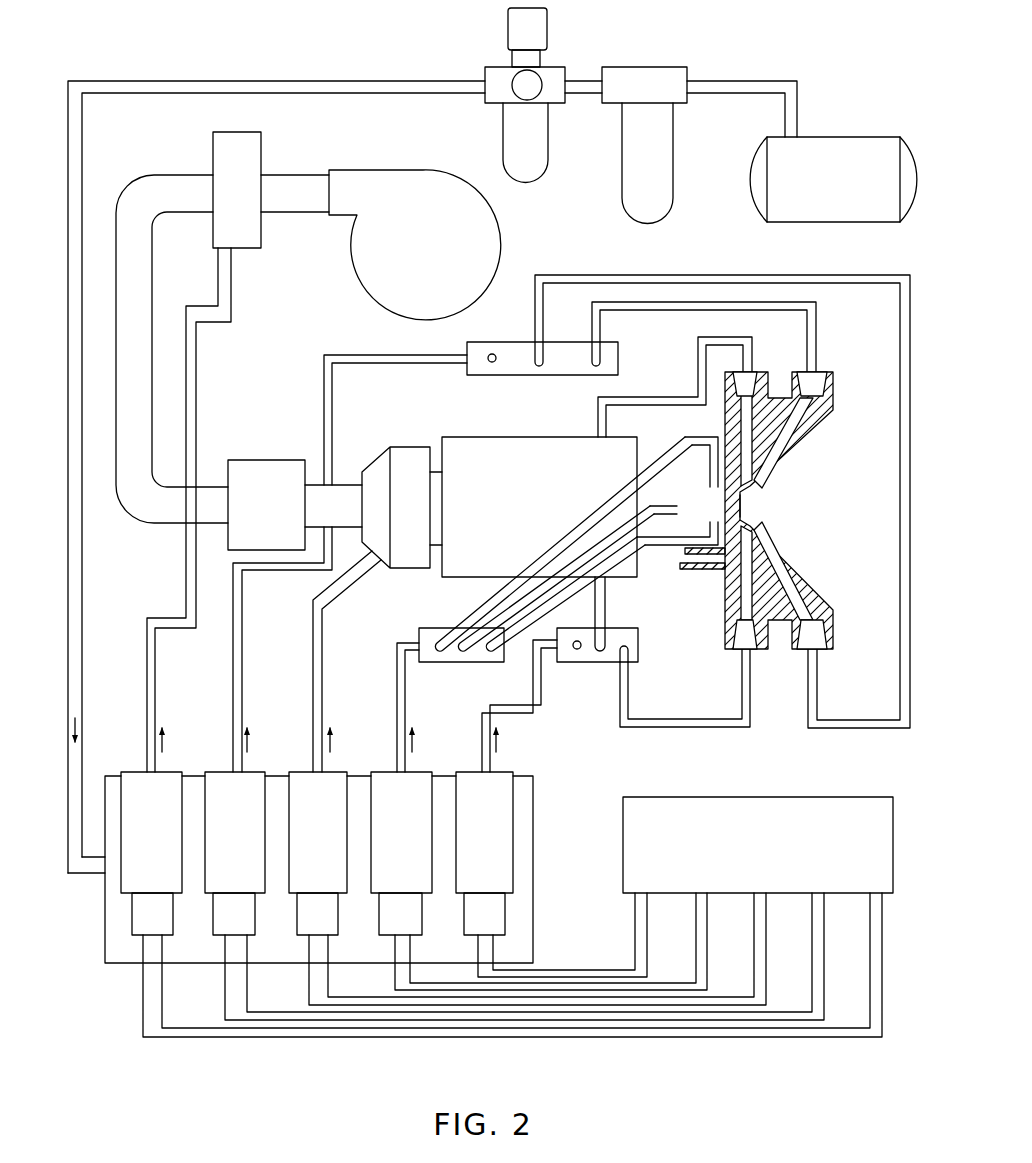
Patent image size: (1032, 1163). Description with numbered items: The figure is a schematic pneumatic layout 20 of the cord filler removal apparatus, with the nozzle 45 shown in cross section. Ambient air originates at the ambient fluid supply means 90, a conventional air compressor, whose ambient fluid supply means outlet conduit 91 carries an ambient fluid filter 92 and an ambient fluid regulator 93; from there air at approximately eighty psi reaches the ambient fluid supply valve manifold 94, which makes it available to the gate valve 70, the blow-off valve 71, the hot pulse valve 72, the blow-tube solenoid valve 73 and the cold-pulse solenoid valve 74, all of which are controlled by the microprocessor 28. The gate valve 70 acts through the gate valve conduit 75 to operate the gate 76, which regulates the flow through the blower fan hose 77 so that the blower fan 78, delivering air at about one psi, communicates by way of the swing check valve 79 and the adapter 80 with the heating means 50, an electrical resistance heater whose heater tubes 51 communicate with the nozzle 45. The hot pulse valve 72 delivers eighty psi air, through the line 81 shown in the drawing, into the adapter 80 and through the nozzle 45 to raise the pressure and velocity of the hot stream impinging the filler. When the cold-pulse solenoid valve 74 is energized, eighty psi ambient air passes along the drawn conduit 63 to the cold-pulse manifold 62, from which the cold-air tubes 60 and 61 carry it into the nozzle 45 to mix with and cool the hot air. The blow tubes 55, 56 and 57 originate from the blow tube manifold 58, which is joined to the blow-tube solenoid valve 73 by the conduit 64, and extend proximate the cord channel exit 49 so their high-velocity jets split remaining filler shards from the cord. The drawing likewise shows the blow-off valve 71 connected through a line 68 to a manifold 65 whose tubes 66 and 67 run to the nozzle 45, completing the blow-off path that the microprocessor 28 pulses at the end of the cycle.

The pneumatic control system 20 is at (346, 74).
The microprocessor 28 is at (725, 860).
The nozzle 45 is at (796, 487).
The cord channel exit 49 is at (736, 506).
The heating means 50 is at (495, 520).
The heater tubes 51 is at (643, 448).
The blow tube 55 is at (493, 594).
The blow tube 56 is at (503, 611).
The blow tube 57 is at (547, 614).
The blow tube manifold 58 is at (488, 664).
The cold-air tube 60 is at (634, 718).
The cold-air tube 61 is at (688, 398).
The cold-pulse manifold 62 is at (641, 658).
The conduit 63 is at (531, 678).
The conduit 64 is at (408, 680).
The connector block 65 is at (553, 368).
The conduit 66 is at (684, 312).
The conduit 67 is at (535, 284).
The conduit 68 is at (432, 366).
The gate valve 70 is at (141, 840).
The blow-off valve 71 is at (225, 840).
The hot pulse valve 72 is at (308, 840).
The blow-tube solenoid valve 73 is at (391, 840).
The cold-pulse solenoid valve 74 is at (474, 840).
The gate valve conduit 75 is at (158, 678).
The gate 76 is at (227, 175).
The blower fan hose 77 is at (127, 340).
The blower fan 78 is at (405, 255).
The swing check valve 79 is at (255, 510).
The adapter 80 is at (400, 518).
The conduit 81 is at (326, 678).
The ambient fluid supply means 90 is at (812, 192).
The ambient fluid supply means outlet conduit 91 is at (799, 121).
The ambient fluid filter 92 is at (636, 155).
The ambient fluid regulator 93 is at (517, 155).
The ambient fluid supply valve manifold 94 is at (110, 961).